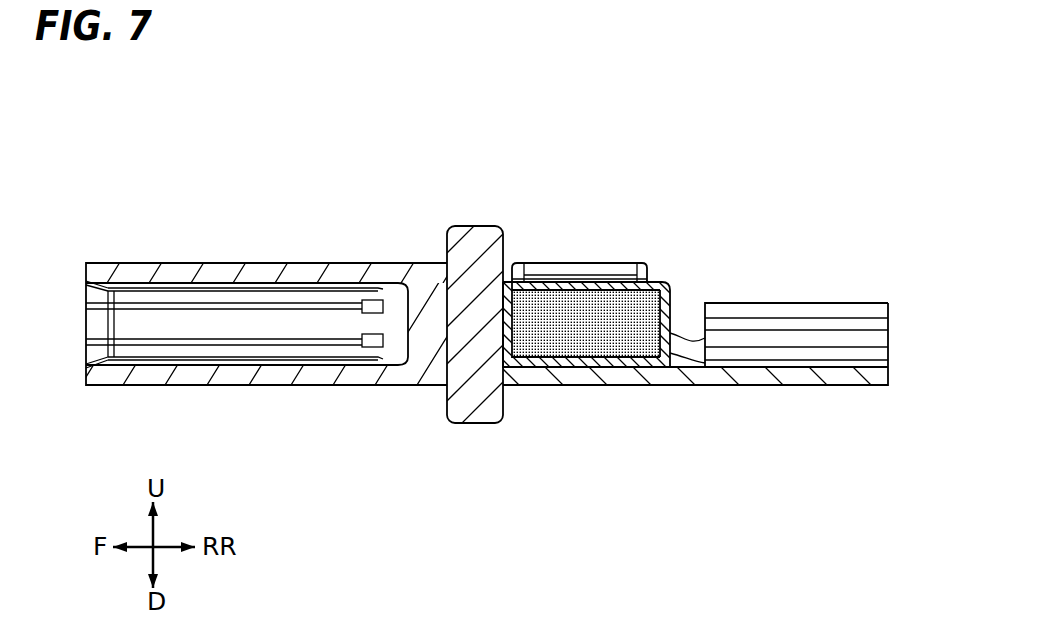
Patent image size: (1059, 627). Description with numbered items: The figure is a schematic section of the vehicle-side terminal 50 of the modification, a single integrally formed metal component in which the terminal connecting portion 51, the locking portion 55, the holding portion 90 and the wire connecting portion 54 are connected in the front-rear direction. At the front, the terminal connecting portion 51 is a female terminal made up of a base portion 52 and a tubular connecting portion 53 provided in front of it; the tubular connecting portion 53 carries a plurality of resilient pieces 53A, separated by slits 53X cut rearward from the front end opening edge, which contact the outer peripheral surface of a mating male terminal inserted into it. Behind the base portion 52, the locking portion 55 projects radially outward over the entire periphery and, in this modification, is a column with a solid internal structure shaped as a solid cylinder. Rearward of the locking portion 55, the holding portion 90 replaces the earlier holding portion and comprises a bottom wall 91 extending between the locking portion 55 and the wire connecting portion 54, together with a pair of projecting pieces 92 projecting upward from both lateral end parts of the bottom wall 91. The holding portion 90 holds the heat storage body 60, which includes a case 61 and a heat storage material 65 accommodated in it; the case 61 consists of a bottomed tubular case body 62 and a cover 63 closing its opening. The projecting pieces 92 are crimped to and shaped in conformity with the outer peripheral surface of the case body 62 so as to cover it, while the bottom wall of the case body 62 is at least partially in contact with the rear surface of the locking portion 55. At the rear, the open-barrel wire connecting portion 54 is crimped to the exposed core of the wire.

The vehicle-side terminal 50 is at (137, 193).
The terminal connecting portion 51 is at (418, 215).
The base portion 52 is at (423, 300).
The tubular connecting portion 53 is at (340, 275).
The resilient piece 53A is at (240, 260).
The slit 53X is at (151, 314).
The wire connecting portion 54 is at (805, 312).
The locking portion 55 is at (475, 232).
The heat storage body 60 is at (546, 369).
The case 61 is at (727, 228).
The case body 62 is at (637, 287).
The cover 63 is at (670, 302).
The heat storage material 65 is at (626, 352).
The holding portion 90 is at (555, 262).
The bottom wall 91 is at (585, 380).
The projecting piece 92 is at (585, 267).